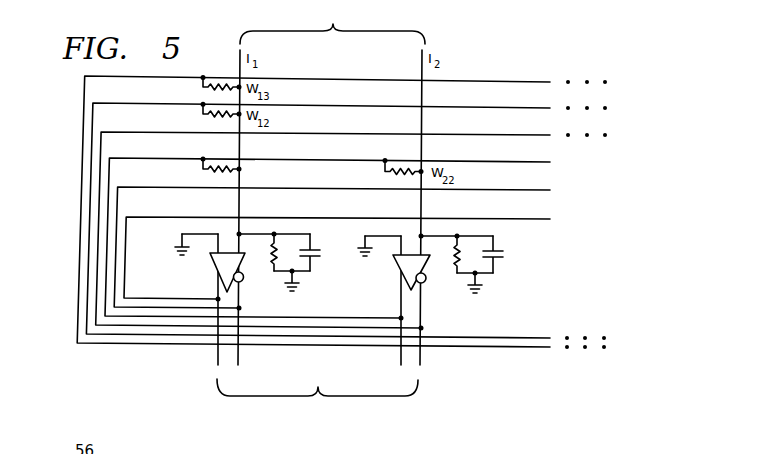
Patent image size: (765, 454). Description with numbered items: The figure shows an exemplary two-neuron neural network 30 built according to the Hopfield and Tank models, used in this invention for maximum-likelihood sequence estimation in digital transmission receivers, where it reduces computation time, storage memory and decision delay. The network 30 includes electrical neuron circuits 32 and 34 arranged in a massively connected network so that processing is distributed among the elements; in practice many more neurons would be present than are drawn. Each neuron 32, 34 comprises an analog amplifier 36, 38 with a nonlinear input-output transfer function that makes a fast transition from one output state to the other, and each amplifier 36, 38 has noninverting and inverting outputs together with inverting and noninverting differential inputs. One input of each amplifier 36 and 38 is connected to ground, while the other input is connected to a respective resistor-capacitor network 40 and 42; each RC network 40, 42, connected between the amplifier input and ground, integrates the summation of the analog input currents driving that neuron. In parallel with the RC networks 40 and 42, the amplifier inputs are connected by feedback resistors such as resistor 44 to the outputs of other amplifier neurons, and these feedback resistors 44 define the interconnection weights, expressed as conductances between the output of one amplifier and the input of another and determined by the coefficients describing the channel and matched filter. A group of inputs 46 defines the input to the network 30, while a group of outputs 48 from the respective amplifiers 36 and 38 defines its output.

The neural network 30 is at (465, 49).
The neuron circuit 32 is at (206, 270).
The neuron circuit 34 is at (393, 278).
The analog amplifier 36 is at (245, 279).
The analog amplifier 38 is at (430, 282).
The resistor-capacitor network 40 is at (317, 242).
The resistor-capacitor network 42 is at (510, 248).
The feedback resistor 44 is at (215, 171).
The inputs 46 is at (262, 29).
The outputs 48 is at (400, 396).